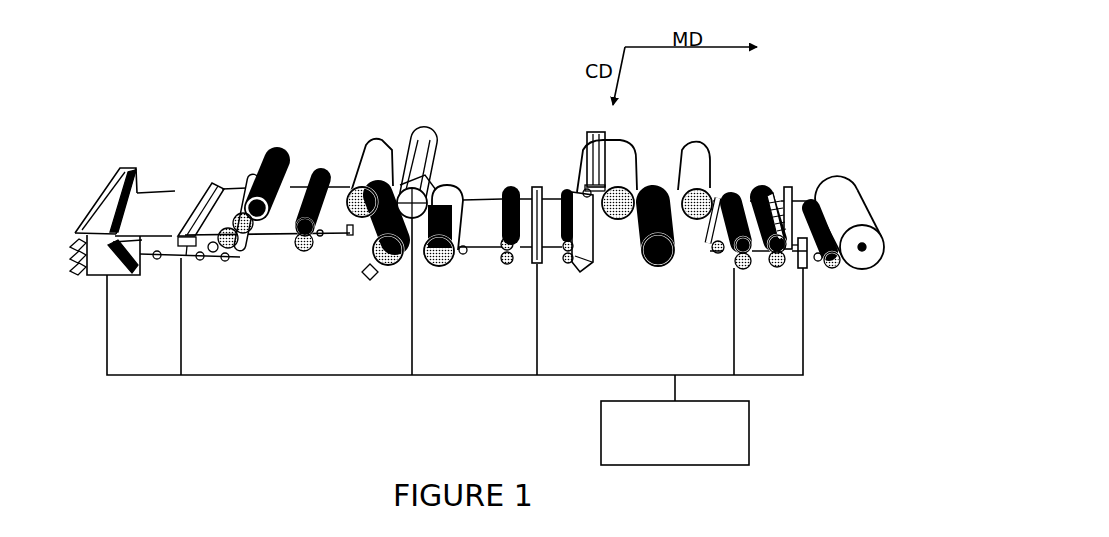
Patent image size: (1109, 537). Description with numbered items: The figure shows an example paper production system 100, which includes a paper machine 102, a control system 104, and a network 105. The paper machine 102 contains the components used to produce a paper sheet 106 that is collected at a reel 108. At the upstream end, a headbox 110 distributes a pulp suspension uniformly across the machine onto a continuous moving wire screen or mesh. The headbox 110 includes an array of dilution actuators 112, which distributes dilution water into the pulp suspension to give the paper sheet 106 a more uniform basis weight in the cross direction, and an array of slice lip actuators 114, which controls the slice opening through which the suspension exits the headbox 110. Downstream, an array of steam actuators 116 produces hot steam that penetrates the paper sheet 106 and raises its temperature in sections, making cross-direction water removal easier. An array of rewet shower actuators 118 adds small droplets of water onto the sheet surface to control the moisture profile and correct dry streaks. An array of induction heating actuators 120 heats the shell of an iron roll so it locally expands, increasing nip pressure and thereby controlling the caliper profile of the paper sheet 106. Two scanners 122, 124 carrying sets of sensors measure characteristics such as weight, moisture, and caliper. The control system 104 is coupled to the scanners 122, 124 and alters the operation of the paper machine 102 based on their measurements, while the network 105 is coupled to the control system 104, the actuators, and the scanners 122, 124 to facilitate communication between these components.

The paper production system 100 is at (250, 442).
The paper machine 102 is at (200, 100).
The control system 104 is at (741, 467).
The network 105 is at (497, 378).
The paper sheet 106 is at (300, 182).
The reel 108 is at (843, 177).
The headbox 110 is at (134, 239).
The array of dilution actuators 112 is at (67, 280).
The array of slice lip actuators 114 is at (135, 167).
The array of steam actuators 116 is at (250, 245).
The array of rewet shower actuators 118 is at (418, 123).
The array of induction heating actuators 120 is at (768, 184).
The scanner 122 is at (535, 182).
The scanner 124 is at (787, 186).